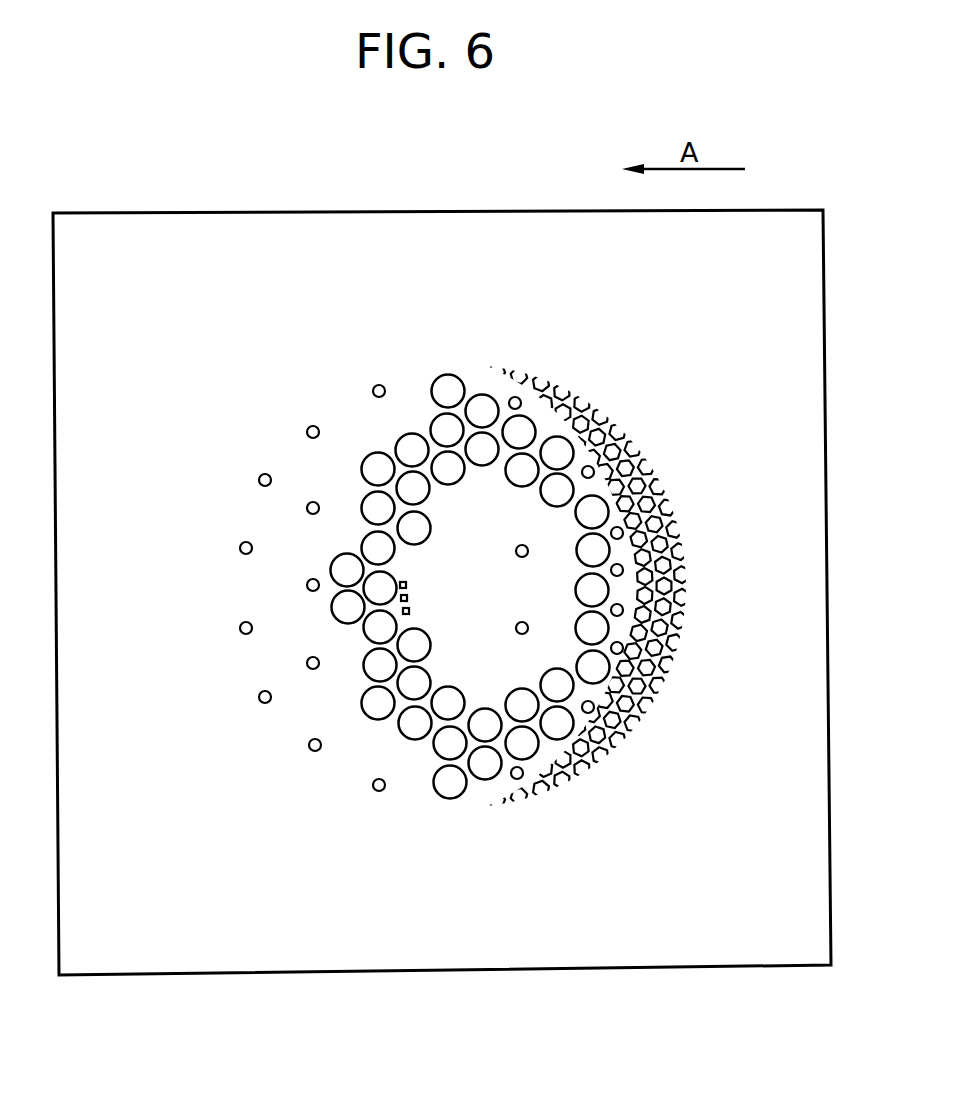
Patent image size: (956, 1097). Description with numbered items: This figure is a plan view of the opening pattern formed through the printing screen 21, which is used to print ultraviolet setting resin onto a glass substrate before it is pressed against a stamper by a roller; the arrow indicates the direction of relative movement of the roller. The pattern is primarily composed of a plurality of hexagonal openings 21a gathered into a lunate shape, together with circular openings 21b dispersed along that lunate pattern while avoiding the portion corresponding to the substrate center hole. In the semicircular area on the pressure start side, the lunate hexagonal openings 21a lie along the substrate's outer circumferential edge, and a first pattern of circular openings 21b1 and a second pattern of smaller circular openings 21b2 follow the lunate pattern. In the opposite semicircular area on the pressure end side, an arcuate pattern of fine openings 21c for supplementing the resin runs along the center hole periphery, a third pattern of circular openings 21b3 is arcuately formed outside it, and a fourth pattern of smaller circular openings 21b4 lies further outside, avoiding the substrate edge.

The printing screen 21 is at (720, 942).
The hexagonal openings 21a is at (674, 602).
The circular openings 21b is at (604, 672).
The first pattern of circular openings 21b1 is at (443, 377).
The second pattern of circular openings 21b2 is at (516, 780).
The third pattern of circular openings 21b3 is at (374, 712).
The fourth pattern of circular openings 21b4 is at (312, 752).
The fine openings 21c is at (410, 568).